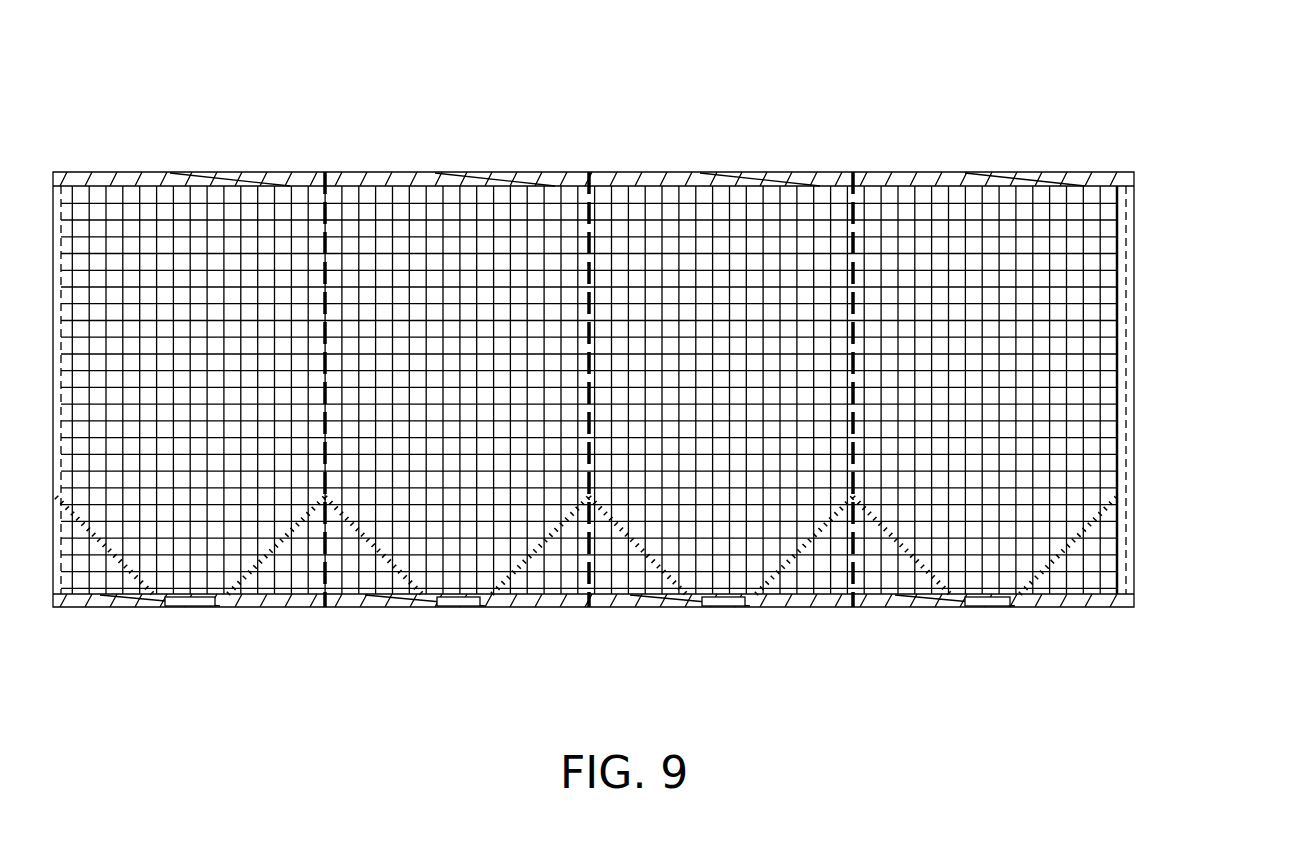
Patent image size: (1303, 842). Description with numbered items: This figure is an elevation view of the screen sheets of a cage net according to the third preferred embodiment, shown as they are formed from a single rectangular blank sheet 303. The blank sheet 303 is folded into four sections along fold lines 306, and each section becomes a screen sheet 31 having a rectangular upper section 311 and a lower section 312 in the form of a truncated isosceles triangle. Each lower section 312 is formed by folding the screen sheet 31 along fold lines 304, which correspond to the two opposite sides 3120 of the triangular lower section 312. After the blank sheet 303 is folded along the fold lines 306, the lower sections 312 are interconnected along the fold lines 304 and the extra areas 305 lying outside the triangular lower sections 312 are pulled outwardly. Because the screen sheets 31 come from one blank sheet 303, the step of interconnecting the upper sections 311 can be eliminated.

The screen sheet 31 is at (1010, 152).
The blank sheet 303 is at (1118, 118).
The upper section 311 is at (737, 225).
The lower section 312 is at (1000, 528).
The fold line 306 is at (326, 212).
The fold line 304 is at (1083, 530).
The opposite side 3120 is at (667, 598).
The extra area 305 is at (288, 607).